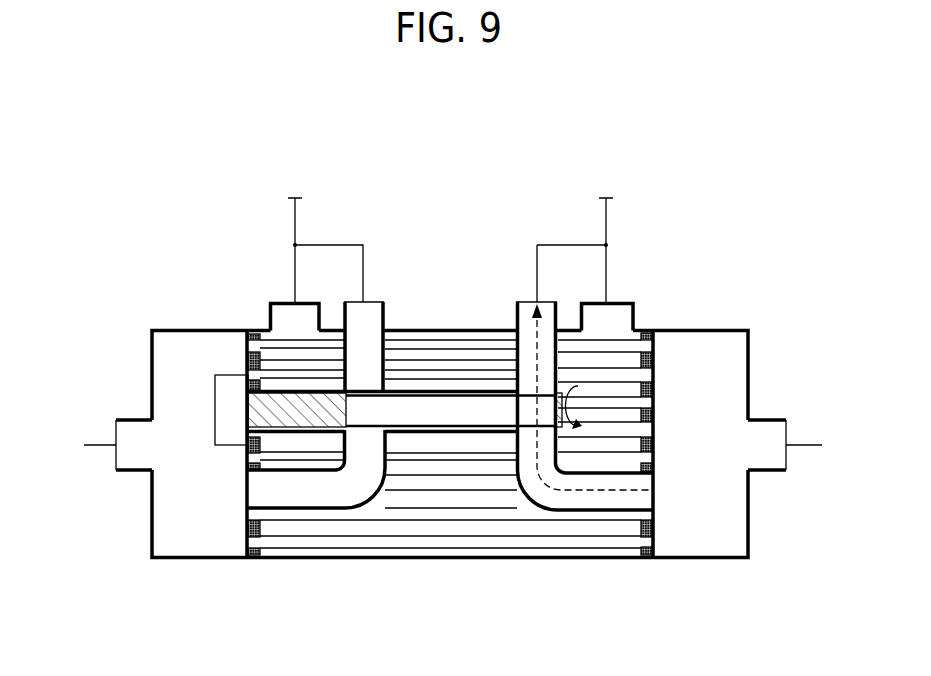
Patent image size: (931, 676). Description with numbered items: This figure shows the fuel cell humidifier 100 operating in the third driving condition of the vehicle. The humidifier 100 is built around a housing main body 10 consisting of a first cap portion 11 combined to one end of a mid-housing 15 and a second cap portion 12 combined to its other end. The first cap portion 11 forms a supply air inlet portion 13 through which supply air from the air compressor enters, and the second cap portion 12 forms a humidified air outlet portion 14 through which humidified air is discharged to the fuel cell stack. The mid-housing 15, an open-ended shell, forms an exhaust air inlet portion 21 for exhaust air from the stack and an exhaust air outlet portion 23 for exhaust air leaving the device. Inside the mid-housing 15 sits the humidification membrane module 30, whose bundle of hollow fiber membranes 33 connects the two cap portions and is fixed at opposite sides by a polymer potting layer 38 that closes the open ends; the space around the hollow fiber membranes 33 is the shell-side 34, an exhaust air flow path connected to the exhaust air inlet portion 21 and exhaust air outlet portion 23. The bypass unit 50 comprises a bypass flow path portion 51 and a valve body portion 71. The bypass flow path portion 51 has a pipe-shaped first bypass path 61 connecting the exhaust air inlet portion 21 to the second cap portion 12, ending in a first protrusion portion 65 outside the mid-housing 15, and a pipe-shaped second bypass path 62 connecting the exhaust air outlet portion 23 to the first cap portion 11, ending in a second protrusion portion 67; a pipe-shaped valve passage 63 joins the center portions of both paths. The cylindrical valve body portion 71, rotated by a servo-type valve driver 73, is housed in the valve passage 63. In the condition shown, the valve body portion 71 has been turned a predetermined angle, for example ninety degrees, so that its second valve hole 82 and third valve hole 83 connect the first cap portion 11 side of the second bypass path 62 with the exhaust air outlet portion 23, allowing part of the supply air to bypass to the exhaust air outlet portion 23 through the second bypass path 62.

The humidifier 100 is at (452, 160).
The housing main body 10 is at (712, 316).
The first cap portion 11 is at (703, 561).
The second cap portion 12 is at (199, 561).
The supply air inlet portion 13 is at (778, 473).
The humidified air outlet portion 14 is at (127, 473).
The mid-housing 15 is at (603, 561).
The exhaust air inlet portion 21 is at (270, 317).
The exhaust air outlet portion 23 is at (637, 312).
The humidification membrane module 30 is at (365, 541).
The hollow fiber membranes 33 is at (327, 521).
The shell-side 34 is at (329, 360).
The potting layer 38 is at (248, 358).
The bypass unit 50 is at (428, 378).
The bypass flow path portion 51 is at (483, 628).
The first bypass path 61 is at (387, 464).
The second bypass path 62 is at (515, 464).
The valve passage 63 is at (450, 434).
The first protrusion portion 65 is at (400, 313).
The second protrusion portion 67 is at (500, 313).
The valve body portion 71 is at (459, 378).
The valve driver 73 is at (214, 387).
The second valve hole 82 is at (558, 374).
The third valve hole 83 is at (562, 428).